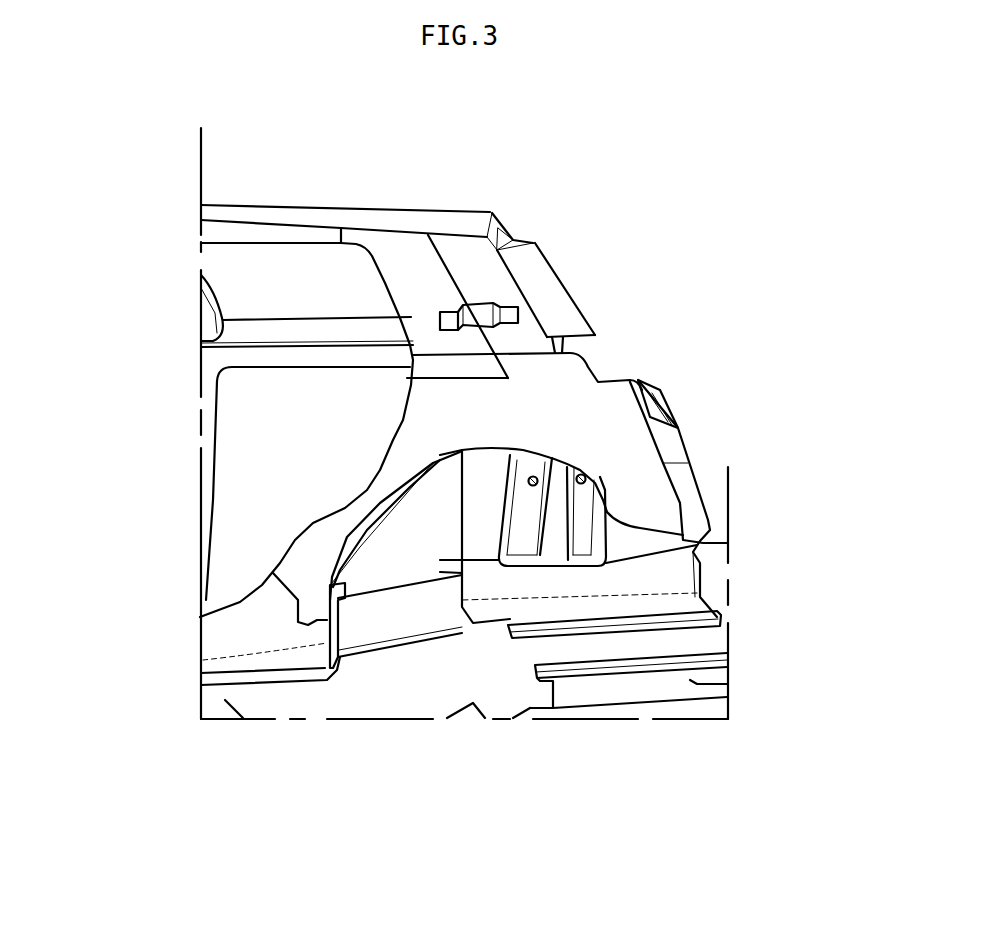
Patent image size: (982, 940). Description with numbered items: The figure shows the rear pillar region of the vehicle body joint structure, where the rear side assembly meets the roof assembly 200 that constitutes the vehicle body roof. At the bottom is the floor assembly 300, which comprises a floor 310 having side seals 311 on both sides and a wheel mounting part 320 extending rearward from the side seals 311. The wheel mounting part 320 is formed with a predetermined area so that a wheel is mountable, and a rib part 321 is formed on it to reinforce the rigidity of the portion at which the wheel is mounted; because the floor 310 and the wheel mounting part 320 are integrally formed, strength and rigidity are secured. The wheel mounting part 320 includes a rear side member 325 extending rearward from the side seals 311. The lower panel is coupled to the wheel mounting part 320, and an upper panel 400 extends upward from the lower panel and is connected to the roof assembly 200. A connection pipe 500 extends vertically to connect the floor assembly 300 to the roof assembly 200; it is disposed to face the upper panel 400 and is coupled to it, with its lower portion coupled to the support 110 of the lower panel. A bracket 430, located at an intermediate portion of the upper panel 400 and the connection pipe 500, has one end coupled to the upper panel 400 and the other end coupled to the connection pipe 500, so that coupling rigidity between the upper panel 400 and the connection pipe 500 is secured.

The support 110 is at (562, 365).
The roof assembly 200 is at (325, 210).
The floor assembly 300 is at (363, 733).
The floor 310 is at (222, 710).
The side seals 311 is at (413, 598).
The wheel mounting part 320 is at (413, 528).
The rib part 321 is at (530, 495).
The rear side member 325 is at (590, 587).
The upper panel 400 is at (400, 282).
The bracket 430 is at (485, 314).
The connection pipe 500 is at (485, 278).